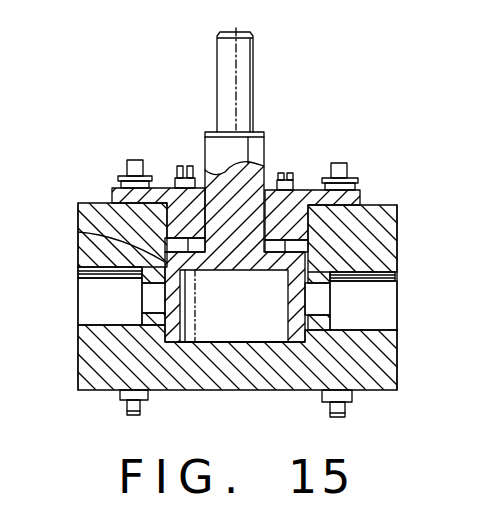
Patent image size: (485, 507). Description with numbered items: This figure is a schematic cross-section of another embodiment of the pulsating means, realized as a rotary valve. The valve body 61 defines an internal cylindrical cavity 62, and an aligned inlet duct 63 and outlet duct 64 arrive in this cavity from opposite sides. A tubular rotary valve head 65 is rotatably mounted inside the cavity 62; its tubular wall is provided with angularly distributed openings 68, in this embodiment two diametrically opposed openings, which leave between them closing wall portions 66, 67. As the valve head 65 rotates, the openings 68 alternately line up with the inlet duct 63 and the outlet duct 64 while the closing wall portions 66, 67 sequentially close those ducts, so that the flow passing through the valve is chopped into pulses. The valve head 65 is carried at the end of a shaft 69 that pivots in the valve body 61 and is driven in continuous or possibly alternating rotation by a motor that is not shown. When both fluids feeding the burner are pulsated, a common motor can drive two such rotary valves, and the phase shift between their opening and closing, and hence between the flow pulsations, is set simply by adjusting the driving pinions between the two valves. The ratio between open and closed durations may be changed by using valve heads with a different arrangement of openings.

The valve body 61 is at (228, 378).
The internal cylindrical cavity 62 is at (78, 232).
The inlet duct 63 is at (82, 302).
The outlet duct 64 is at (387, 288).
The tubular rotary valve head 65 is at (292, 313).
The closing wall portion 66 is at (165, 280).
The closing wall portion 67 is at (297, 315).
The openings 68 is at (200, 342).
The shaft 69 is at (215, 145).